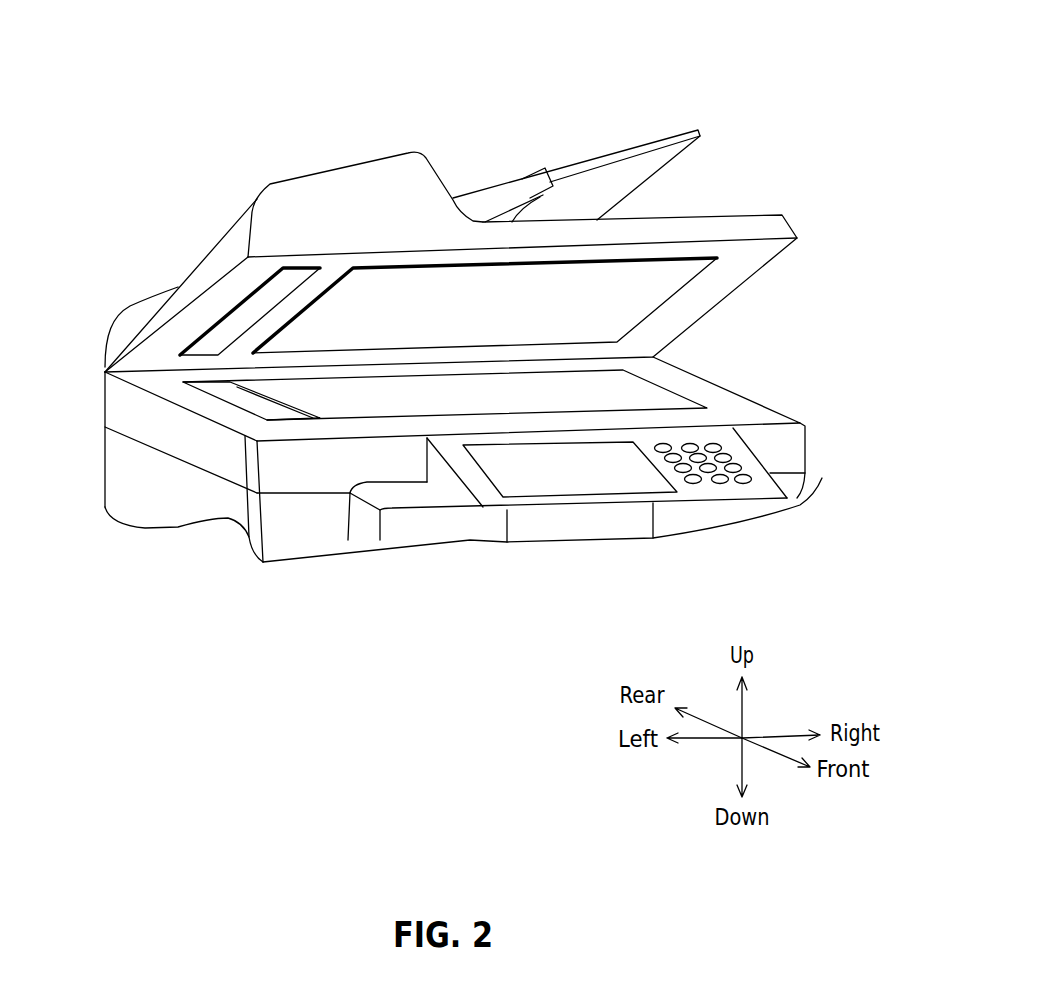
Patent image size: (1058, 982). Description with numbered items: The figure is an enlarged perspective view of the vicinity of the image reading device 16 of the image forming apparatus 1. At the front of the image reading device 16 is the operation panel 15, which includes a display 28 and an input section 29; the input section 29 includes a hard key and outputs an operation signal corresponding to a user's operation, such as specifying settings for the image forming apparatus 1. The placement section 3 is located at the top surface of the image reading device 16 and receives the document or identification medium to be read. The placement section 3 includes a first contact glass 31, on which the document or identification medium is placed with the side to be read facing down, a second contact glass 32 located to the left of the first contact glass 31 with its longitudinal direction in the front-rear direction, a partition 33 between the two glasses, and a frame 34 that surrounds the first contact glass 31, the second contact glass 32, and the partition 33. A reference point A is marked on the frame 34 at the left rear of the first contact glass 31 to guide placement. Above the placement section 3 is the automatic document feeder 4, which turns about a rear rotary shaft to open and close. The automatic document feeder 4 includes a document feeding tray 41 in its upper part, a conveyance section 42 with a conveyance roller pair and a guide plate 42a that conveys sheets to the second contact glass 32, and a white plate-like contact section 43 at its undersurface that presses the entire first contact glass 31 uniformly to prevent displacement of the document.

The image forming apparatus 1 is at (714, 68).
The placement section 3 is at (743, 358).
The automatic document feeder 4 is at (797, 187).
The operation panel 15 is at (507, 512).
The image reading device 16 is at (788, 450).
The display 28 is at (560, 480).
The input section 29 is at (720, 483).
The first contact glass 31 is at (647, 398).
The second contact glass 32 is at (216, 393).
The partition 33 is at (268, 408).
The frame 34 is at (757, 418).
The document feeding tray 41 is at (613, 150).
The conveyance section 42 is at (363, 190).
The guide plate 42a is at (257, 303).
The contact section 43 is at (493, 300).
The reference point A is at (240, 392).